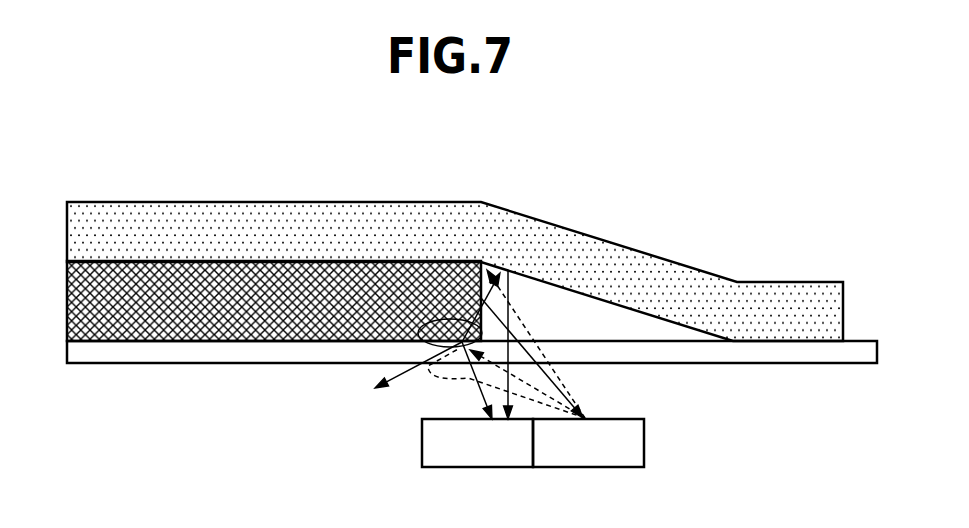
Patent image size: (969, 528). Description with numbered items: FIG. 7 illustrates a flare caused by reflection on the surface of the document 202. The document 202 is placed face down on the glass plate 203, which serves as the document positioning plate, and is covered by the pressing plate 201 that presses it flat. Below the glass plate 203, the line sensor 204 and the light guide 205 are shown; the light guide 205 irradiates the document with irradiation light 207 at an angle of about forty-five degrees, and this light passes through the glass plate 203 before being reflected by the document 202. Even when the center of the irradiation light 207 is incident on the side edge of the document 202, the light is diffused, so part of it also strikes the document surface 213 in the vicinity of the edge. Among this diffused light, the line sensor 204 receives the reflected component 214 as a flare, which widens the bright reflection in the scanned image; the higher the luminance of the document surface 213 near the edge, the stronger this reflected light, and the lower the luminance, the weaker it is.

The pressing plate 201 is at (296, 210).
The document 202 is at (287, 334).
The glass plate 203 is at (160, 356).
The line sensor 204 is at (477, 443).
The light guide 205 is at (588, 443).
The irradiation light 207 is at (557, 377).
The document surface 213 is at (458, 319).
The reflected light 214 is at (480, 400).